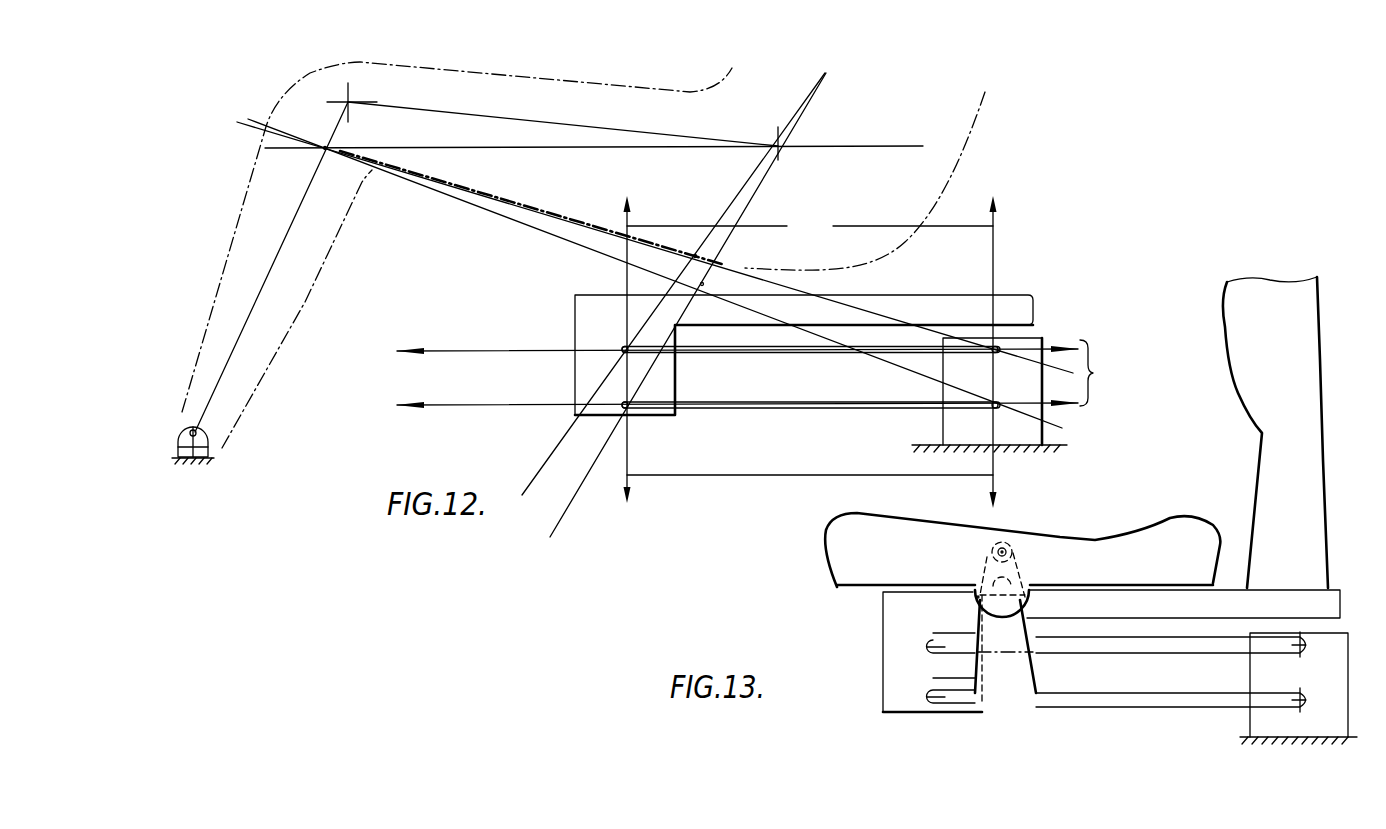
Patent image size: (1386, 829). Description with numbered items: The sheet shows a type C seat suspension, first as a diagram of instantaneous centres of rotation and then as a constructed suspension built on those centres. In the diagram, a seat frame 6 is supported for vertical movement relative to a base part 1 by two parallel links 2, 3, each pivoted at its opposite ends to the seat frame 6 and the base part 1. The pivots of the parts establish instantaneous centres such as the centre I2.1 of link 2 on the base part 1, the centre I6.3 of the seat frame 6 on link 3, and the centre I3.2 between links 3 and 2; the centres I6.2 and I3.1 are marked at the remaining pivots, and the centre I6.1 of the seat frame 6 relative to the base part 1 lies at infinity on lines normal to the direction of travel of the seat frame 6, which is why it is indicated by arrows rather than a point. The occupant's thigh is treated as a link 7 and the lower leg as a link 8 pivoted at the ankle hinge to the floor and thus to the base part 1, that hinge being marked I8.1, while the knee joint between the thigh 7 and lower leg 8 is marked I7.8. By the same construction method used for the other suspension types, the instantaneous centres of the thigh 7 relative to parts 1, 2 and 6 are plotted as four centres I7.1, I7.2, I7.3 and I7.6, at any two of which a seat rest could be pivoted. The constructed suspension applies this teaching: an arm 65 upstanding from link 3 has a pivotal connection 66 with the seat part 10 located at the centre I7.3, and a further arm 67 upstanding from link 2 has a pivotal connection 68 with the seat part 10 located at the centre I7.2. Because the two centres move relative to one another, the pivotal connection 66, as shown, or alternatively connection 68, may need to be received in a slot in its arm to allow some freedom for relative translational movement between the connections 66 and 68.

In FIG. 12, the base part 1 is at (928, 450).
In FIG. 13, the base part 1 is at (1267, 673).
In FIG. 12, the link 2 is at (831, 449).
In FIG. 13, the link 2 is at (1140, 668).
In FIG. 12, the link 3 is at (803, 356).
In FIG. 13, the link 3 is at (1063, 653).
In FIG. 12, the seat frame 6 is at (942, 303).
In FIG. 12, the thigh 7 is at (538, 125).
In FIG. 12, the lower leg 8 is at (267, 279).
In FIG. 13, the seat part 10 is at (870, 564).
In FIG. 13, the arm 65 is at (935, 630).
In FIG. 13, the pivotal connection 66 is at (1015, 550).
In FIG. 13, the further arm 67 is at (935, 678).
In FIG. 13, the pivotal connection 68 is at (1027, 600).
In FIG. 12, the instantaneous center 7-8 I7.8 is at (352, 99).
In FIG. 12, the instantaneous centre of rotation I7.1 is at (332, 144).
In FIG. 12, the instantaneous centre of rotation I7.6 is at (782, 146).
In FIG. 12, the instantaneous centre of rotation I7.3 is at (695, 255).
In FIG. 13, the instantaneous centre of rotation I7.3 is at (992, 550).
In FIG. 12, the instantaneous centre of rotation I7.2 is at (702, 283).
In FIG. 13, the instantaneous centre of rotation I7.2 is at (977, 598).
In FIG. 12, the instantaneous centre I3.2 is at (810, 352).
In FIG. 12, the instantaneous centre I6.3 is at (625, 347).
In FIG. 12, the instantaneous centre I6.1 is at (787, 390).
In FIG. 12, the instantaneous center 6-2 I6.2 is at (627, 408).
In FIG. 12, the instantaneous center 3-1 I3.1 is at (996, 352).
In FIG. 12, the instantaneous centre I2.1 is at (997, 408).
In FIG. 12, the instantaneous center 8-1 I8.1 is at (210, 438).